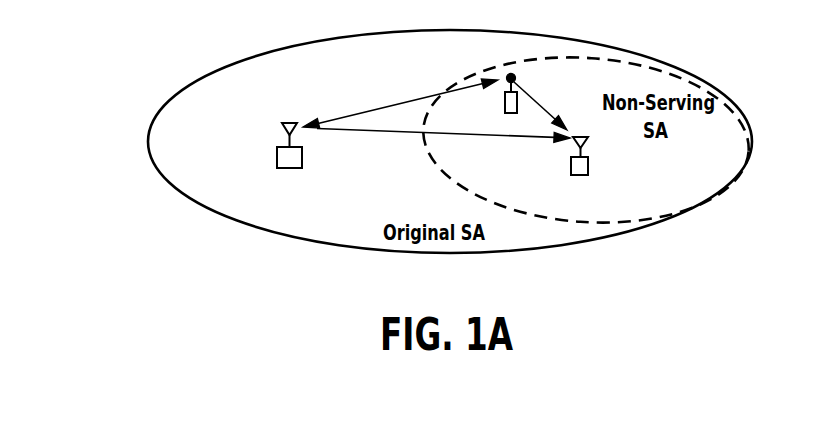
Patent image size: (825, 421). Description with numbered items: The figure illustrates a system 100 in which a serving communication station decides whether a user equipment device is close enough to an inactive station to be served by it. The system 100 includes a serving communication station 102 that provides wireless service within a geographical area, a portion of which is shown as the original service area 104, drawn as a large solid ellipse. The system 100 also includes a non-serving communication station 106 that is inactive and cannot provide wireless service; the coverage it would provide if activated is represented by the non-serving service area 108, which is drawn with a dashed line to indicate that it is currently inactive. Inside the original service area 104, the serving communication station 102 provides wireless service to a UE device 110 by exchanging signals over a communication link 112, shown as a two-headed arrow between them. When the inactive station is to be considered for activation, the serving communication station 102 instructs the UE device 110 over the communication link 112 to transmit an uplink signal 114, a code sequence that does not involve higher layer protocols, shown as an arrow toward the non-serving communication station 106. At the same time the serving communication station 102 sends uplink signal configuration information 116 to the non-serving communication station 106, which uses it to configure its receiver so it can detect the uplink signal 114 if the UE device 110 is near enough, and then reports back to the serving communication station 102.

The system 100 is at (180, 240).
The serving communication station 102 is at (302, 168).
The original service area 104 is at (175, 95).
The non-serving communication station 106 is at (588, 160).
The non-serving service area 108 is at (575, 58).
The UE device 110 is at (498, 100).
The communication link 112 is at (413, 101).
The uplink signal 114 is at (533, 97).
The uplink signal configuration information 116 is at (462, 142).